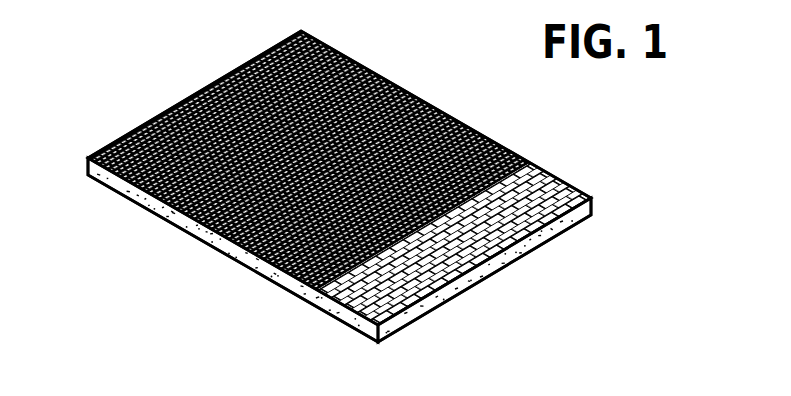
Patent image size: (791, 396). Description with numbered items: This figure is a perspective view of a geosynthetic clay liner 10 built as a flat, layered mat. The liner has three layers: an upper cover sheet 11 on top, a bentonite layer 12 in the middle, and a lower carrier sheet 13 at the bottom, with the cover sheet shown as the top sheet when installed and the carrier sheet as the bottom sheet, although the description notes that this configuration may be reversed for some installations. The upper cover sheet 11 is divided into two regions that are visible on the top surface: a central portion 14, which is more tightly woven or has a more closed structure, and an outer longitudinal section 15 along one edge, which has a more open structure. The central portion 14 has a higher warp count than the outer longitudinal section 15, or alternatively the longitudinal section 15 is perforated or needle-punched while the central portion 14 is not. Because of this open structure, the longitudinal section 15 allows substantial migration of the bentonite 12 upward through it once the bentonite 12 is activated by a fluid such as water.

The geosynthetic clay liner 10 is at (146, 104).
The upper cover sheet 11 is at (108, 146).
The bentonite layer 12 is at (134, 202).
The lower carrier sheet 13 is at (198, 247).
The central portion 14 is at (422, 100).
The outer longitudinal section 15 is at (546, 176).